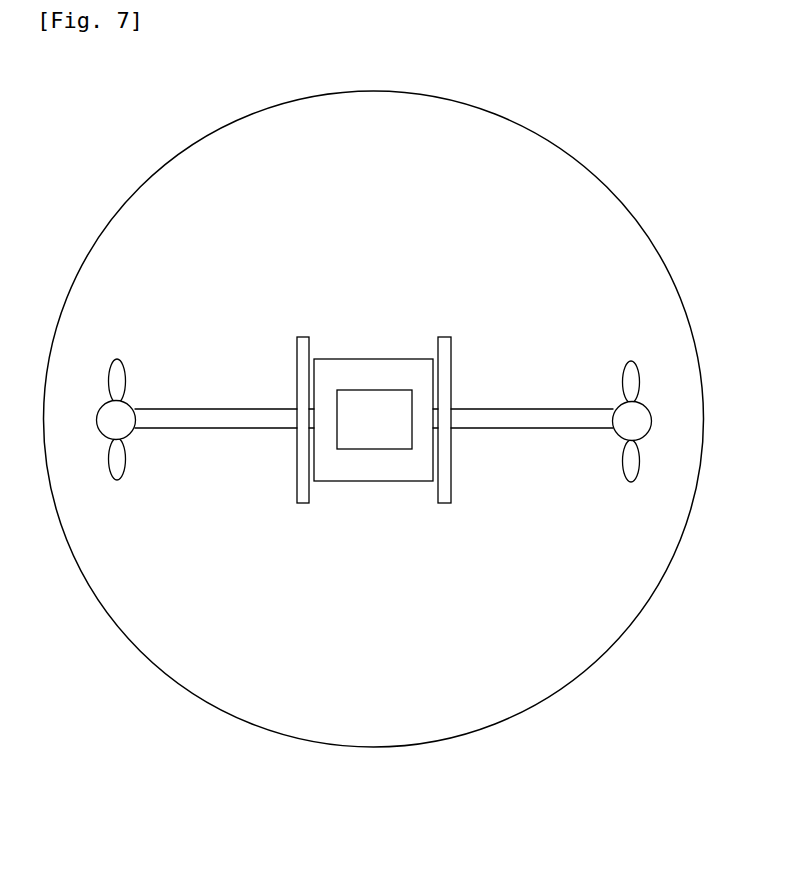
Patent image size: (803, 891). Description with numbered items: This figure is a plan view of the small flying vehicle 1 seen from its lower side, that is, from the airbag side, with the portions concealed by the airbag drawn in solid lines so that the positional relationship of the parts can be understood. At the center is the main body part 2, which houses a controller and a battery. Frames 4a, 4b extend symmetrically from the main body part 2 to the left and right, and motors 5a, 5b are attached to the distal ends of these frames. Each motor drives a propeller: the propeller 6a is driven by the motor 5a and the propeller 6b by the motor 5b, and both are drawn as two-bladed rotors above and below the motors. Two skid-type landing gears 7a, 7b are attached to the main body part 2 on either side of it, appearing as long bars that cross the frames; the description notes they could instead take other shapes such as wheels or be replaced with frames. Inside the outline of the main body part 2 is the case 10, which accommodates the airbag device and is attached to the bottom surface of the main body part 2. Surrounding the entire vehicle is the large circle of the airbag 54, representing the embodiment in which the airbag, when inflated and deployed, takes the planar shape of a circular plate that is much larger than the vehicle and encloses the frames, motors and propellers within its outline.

The small flying vehicle 1 is at (376, 419).
The main body part 2 is at (368, 359).
The frame 4a is at (178, 407).
The frame 4b is at (567, 407).
The motor 5a is at (108, 422).
The motor 5b is at (640, 428).
The propeller 6a is at (120, 383).
The propeller 6b is at (633, 389).
The landing gear 7a is at (295, 373).
The landing gear 7b is at (453, 388).
The case 10 is at (379, 447).
The airbag 54 is at (622, 640).